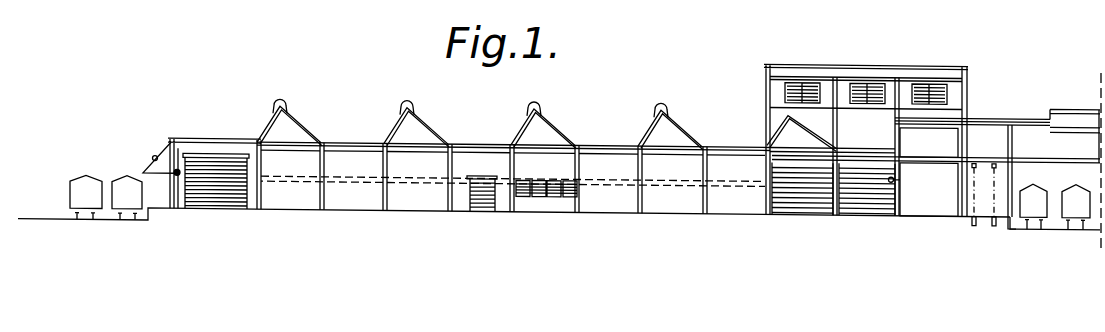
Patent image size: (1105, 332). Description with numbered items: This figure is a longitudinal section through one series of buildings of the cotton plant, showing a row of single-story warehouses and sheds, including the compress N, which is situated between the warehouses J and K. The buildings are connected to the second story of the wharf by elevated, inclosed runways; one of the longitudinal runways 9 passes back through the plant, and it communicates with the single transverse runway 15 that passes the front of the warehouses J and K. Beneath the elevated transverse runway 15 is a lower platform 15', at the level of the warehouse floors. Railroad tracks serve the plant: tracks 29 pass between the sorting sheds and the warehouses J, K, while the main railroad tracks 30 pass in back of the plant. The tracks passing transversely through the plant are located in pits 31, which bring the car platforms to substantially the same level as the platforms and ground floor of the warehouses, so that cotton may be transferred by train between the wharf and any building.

The compress N is at (600, 124).
The longitudinal runway 9 is at (1072, 132).
The transverse runway 15 is at (929, 143).
The lower platform 15' is at (924, 190).
The railroad tracks 29 is at (1067, 220).
The main railroad tracks 30 is at (93, 221).
The pits 31 is at (1011, 221).